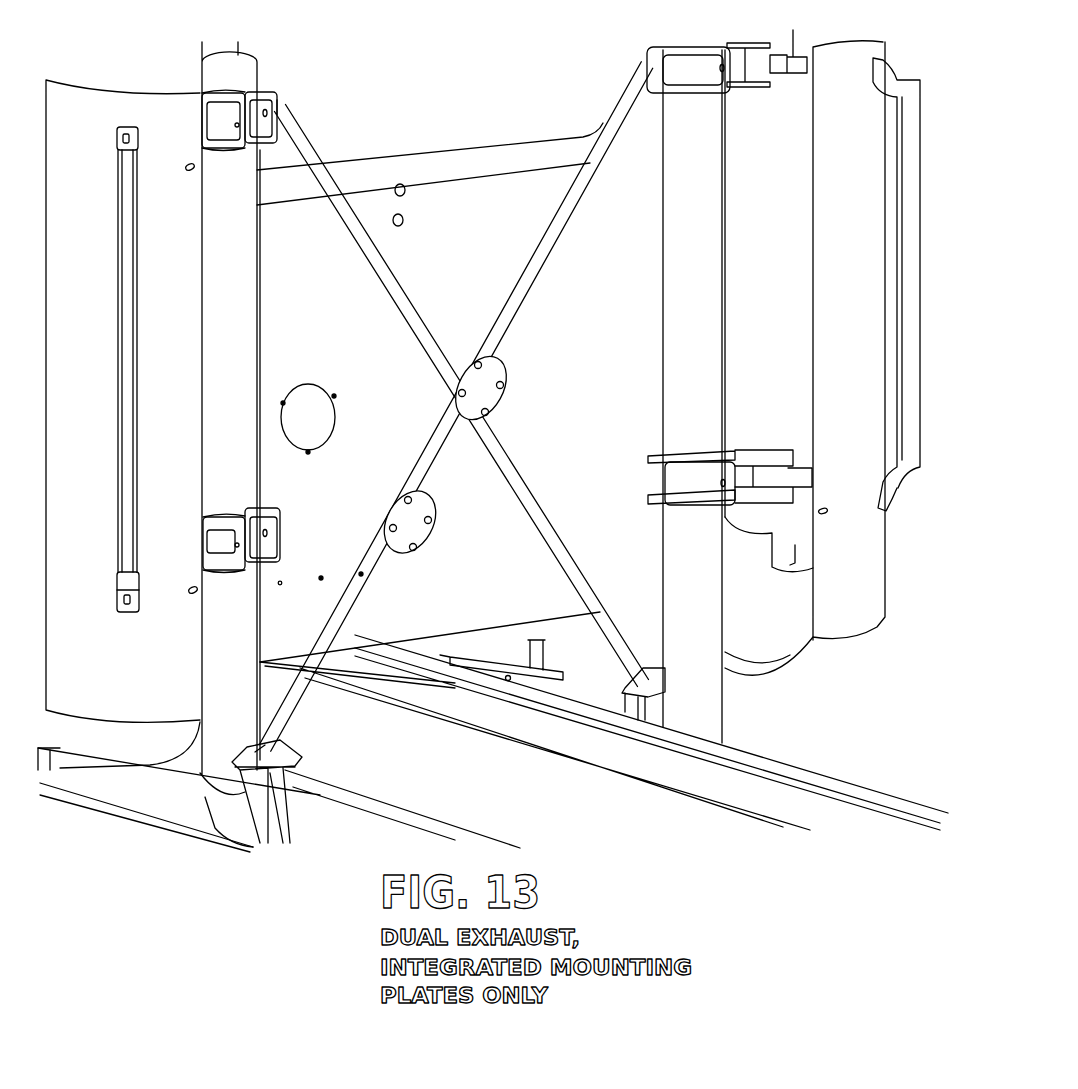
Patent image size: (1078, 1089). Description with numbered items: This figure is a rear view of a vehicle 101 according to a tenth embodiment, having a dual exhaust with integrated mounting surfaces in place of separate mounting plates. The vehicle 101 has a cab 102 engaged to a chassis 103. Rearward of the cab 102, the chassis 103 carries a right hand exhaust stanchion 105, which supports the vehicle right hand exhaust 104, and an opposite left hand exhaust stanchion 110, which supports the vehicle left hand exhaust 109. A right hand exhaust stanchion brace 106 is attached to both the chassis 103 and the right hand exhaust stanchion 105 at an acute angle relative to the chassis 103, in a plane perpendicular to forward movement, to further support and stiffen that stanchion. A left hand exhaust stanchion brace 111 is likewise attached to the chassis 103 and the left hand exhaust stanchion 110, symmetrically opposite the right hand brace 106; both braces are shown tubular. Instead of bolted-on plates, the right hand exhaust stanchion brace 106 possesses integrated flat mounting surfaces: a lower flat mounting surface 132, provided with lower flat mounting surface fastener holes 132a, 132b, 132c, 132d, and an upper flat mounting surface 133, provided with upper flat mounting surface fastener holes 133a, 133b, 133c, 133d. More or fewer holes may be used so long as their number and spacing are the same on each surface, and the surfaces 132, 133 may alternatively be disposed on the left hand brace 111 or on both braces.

The vehicle 101 is at (537, 198).
The cab 102 is at (468, 220).
The chassis 103 is at (640, 755).
The right hand exhaust 104 is at (778, 236).
The right hand exhaust stanchion 105 is at (663, 298).
The right hand exhaust stanchion brace 106 is at (523, 283).
The left hand exhaust 109 is at (205, 332).
The left hand exhaust stanchion 110 is at (218, 485).
The left hand exhaust stanchion brace 111 is at (410, 357).
The right hand exhaust stanchion brace lower flat mounting surface 132 is at (412, 526).
The lower flat mounting surface fastener hole 132a is at (414, 500).
The lower flat mounting surface fastener hole 132b is at (432, 520).
The lower flat mounting surface fastener hole 132c is at (417, 550).
The lower flat mounting surface fastener hole 132d is at (396, 532).
The right hand exhaust stanchion brace upper flat mounting surface 133 is at (485, 393).
The upper flat mounting surface fastener hole 133a is at (482, 363).
The upper flat mounting surface fastener hole 133b is at (504, 385).
The upper flat mounting surface fastener hole 133c is at (489, 413).
The upper flat mounting surface fastener hole 133d is at (467, 396).